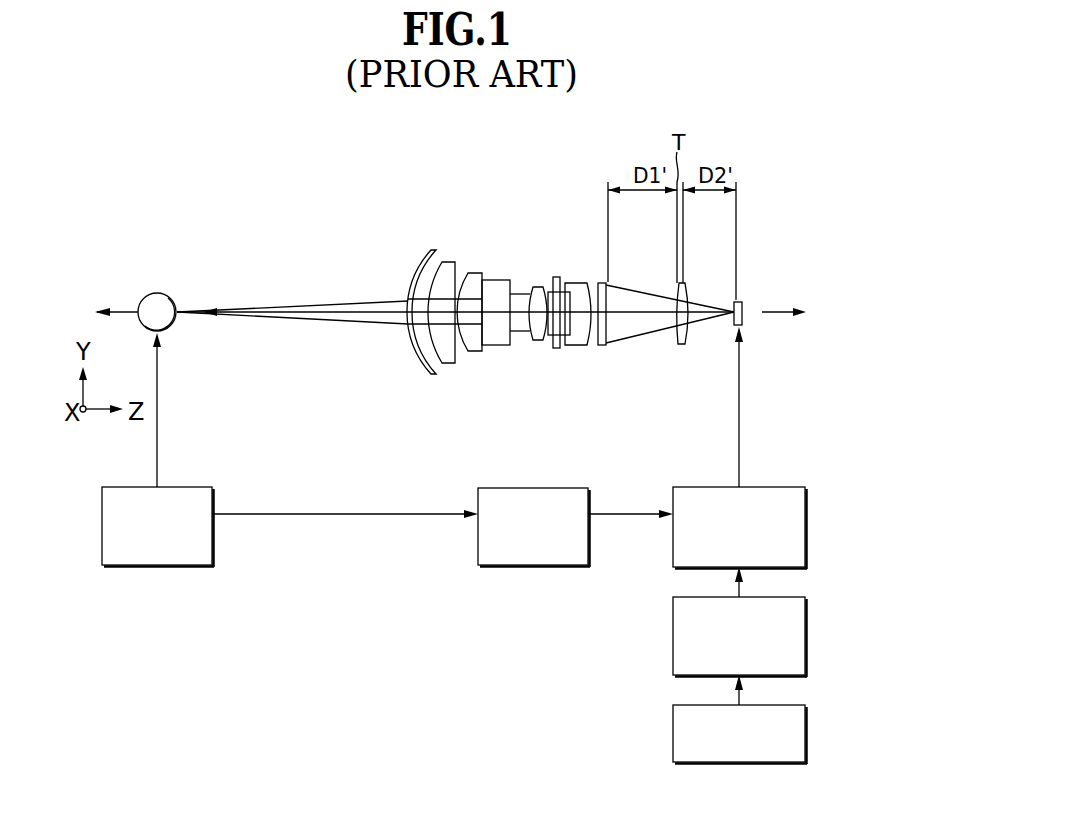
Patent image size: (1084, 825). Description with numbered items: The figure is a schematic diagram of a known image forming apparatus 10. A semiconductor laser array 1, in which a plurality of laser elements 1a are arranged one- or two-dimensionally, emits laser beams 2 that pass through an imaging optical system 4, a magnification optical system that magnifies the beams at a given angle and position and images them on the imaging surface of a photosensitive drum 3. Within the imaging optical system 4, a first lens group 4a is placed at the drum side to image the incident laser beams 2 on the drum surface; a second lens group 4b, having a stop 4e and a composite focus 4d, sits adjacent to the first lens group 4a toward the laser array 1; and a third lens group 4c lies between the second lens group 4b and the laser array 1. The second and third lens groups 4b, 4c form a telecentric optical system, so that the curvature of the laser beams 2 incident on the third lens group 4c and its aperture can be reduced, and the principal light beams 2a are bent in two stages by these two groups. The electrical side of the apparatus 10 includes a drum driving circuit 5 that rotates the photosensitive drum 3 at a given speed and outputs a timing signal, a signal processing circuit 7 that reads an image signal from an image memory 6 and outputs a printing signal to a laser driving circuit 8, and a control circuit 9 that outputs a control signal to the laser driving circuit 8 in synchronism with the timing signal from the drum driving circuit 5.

The semiconductor laser array 1 is at (743, 313).
The laser element 1a is at (735, 302).
The laser beam 2 is at (630, 286).
The principal light beam 2a is at (652, 311).
The photosensitive drum 3 is at (147, 293).
The imaging optical system 4 is at (552, 226).
The first lens group 4a is at (548, 252).
The second lens group 4b is at (607, 252).
The third lens group 4c is at (681, 345).
The composite focus 4d is at (573, 336).
The stop 4e is at (556, 350).
The drum driving circuit 5 is at (133, 567).
The image memory 6 is at (805, 735).
The signal processing circuit 7 is at (805, 617).
The laser driving circuit 8 is at (805, 515).
The control circuit 9 is at (518, 567).
The image forming apparatus 10 is at (297, 200).